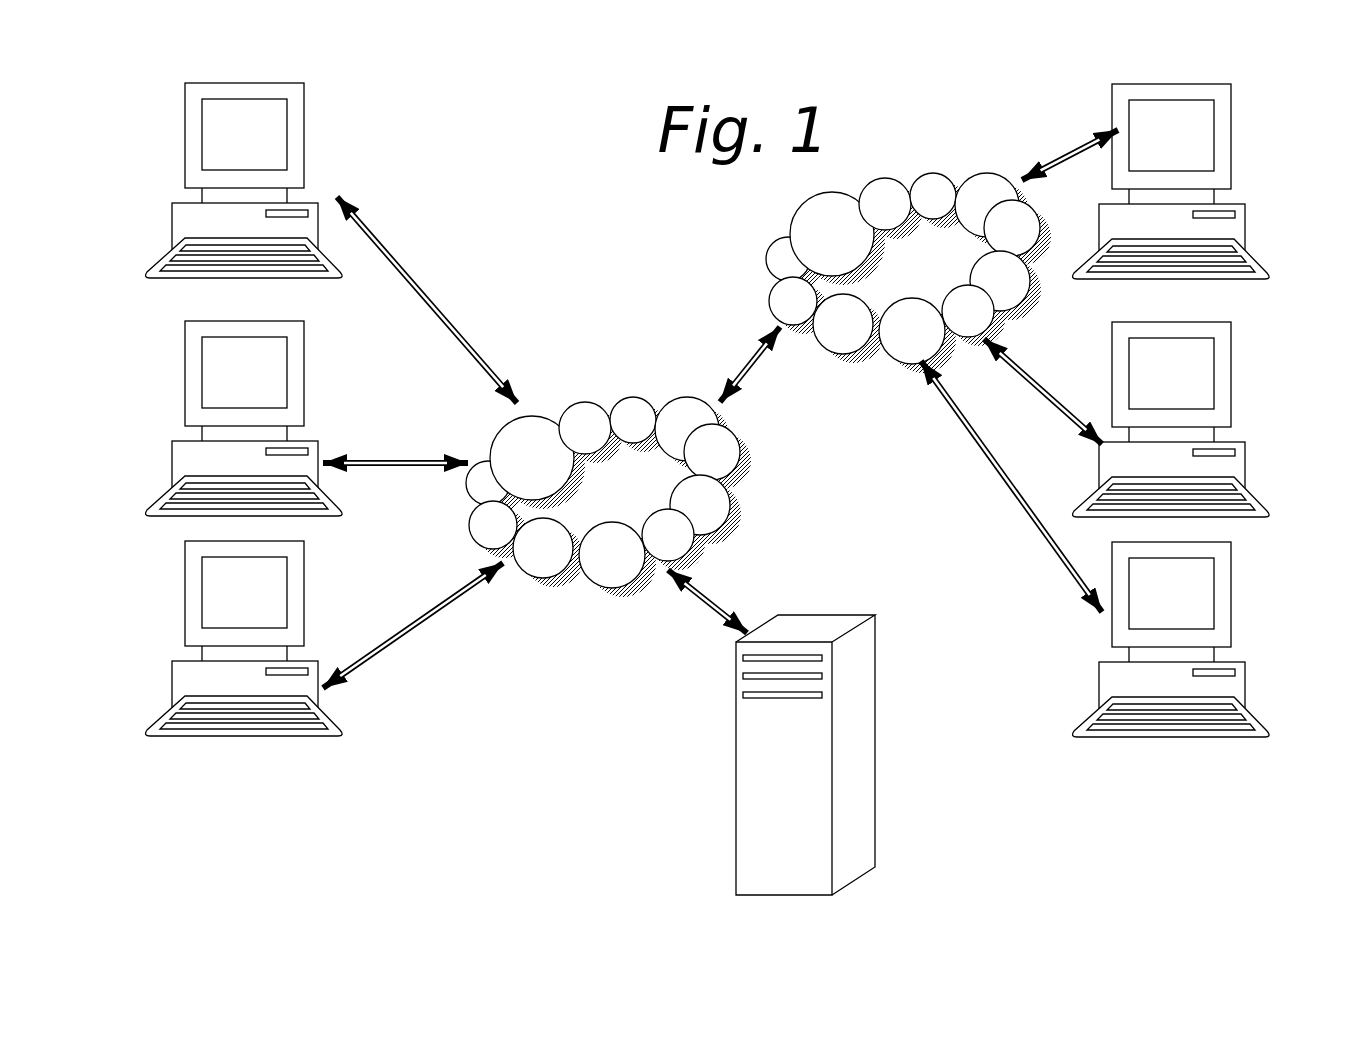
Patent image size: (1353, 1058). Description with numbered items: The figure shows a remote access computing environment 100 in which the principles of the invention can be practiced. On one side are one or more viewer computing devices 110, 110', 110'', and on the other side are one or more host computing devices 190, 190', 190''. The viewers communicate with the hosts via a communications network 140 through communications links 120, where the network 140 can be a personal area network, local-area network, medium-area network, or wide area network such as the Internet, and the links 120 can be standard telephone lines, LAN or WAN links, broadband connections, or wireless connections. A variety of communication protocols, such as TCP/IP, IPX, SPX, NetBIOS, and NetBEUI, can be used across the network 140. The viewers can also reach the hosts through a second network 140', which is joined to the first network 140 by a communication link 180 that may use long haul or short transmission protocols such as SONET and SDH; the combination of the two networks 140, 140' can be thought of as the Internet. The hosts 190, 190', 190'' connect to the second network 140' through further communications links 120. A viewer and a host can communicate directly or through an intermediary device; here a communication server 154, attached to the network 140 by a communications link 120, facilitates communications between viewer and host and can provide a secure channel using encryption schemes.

The remote access computing environment 100 is at (620, 278).
The viewer computing device 110 is at (253, 167).
The viewer computing device 110' is at (264, 408).
The viewer computing device 110'' is at (262, 631).
The communications link 120 is at (453, 305).
The communications network 140 is at (608, 497).
The second network 140' is at (908, 273).
The communication server 154 is at (835, 633).
The communication link 180 is at (742, 352).
The host computing device 190 is at (1185, 167).
The host computing device 190' is at (1185, 409).
The host computing device 190'' is at (1195, 633).